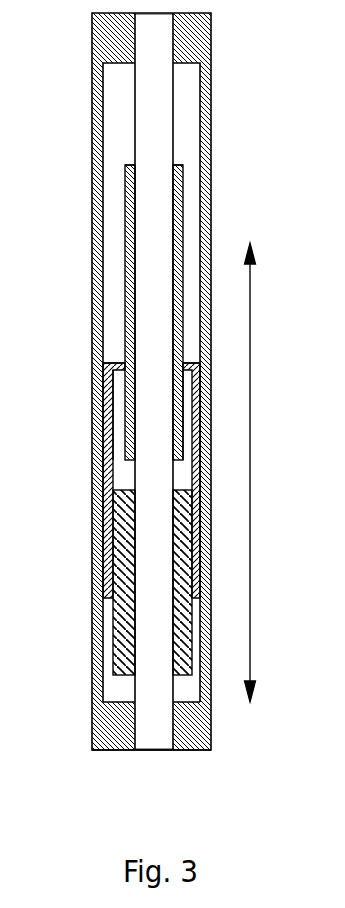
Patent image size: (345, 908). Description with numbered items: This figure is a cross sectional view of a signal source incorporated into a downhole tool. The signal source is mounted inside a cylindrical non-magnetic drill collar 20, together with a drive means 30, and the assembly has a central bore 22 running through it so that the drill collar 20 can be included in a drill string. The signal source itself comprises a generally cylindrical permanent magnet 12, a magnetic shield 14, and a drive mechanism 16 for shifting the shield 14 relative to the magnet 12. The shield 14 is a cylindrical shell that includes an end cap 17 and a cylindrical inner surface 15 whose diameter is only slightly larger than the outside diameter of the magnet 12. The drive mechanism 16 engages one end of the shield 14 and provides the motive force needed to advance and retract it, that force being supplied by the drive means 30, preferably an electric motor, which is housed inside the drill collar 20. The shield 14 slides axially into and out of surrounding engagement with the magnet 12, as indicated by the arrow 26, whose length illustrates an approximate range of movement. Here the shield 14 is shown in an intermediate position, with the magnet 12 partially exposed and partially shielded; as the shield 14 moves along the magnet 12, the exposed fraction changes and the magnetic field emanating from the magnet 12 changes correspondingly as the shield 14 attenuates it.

The permanent magnet 12 is at (112, 640).
The magnetic shield 14 is at (104, 406).
The cylindrical inner surface 15 is at (120, 476).
The drive mechanism 16 is at (127, 301).
The end cap 17 is at (113, 363).
The drill collar 20 is at (92, 707).
The central bore 22 is at (157, 133).
The arrow 26 is at (250, 473).
The drive means 30 is at (112, 170).